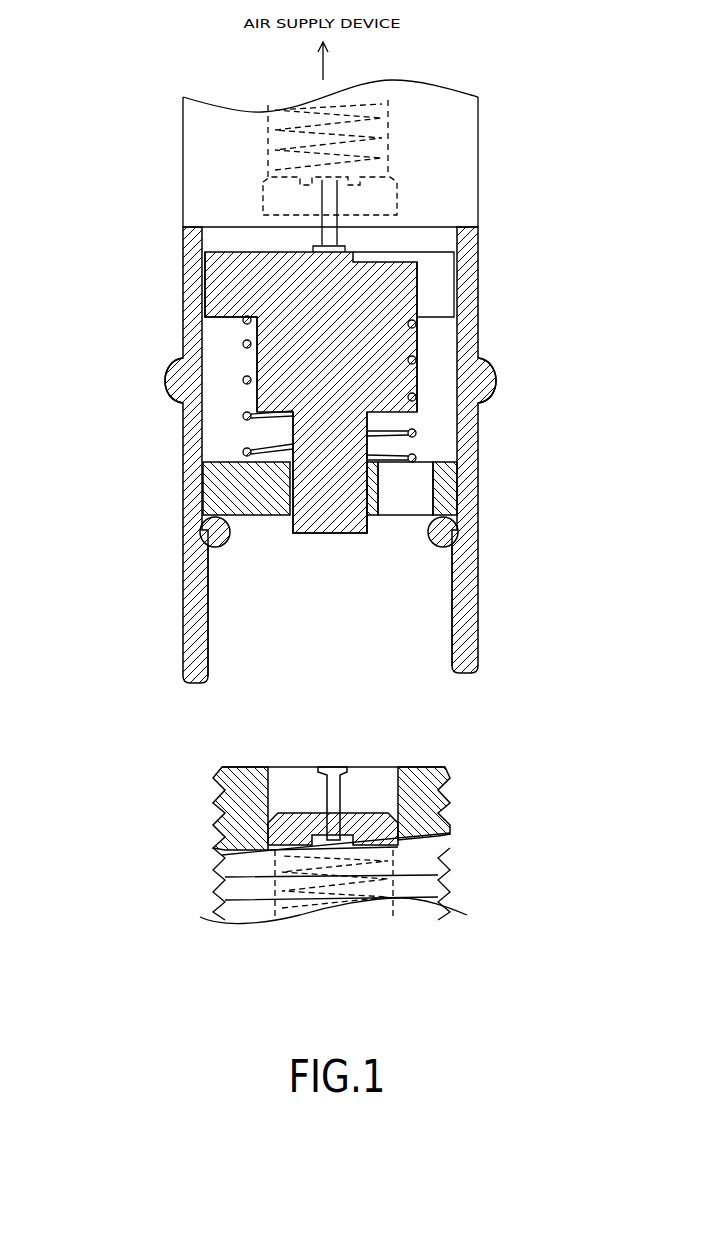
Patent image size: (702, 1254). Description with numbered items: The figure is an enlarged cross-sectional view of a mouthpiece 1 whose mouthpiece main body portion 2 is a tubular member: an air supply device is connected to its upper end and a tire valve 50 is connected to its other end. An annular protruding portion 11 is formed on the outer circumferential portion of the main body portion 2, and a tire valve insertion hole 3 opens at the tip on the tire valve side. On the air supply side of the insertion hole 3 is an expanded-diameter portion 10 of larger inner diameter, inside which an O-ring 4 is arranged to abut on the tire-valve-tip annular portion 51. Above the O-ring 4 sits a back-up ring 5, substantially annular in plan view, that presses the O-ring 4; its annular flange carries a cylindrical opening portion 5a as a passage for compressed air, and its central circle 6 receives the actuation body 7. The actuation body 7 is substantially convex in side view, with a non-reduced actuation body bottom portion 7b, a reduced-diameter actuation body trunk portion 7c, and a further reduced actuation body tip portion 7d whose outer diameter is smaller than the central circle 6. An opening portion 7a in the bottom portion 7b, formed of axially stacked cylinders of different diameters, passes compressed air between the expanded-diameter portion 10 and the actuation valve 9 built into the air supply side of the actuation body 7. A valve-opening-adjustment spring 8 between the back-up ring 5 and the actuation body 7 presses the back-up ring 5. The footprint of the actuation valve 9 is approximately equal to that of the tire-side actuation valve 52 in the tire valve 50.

The mouthpiece 1 is at (157, 182).
The mouthpiece main body portion 2 is at (433, 207).
The tire valve insertion hole 3 is at (303, 638).
The O-ring 4 is at (447, 532).
The back-up ring 5 is at (212, 484).
The opening portion 5a is at (412, 490).
The central circle 6 is at (370, 530).
The actuation body 7 is at (233, 240).
The opening portion 7a is at (433, 283).
The actuation body bottom portion 7b is at (228, 293).
The actuation body trunk portion 7c is at (288, 362).
The actuation body tip portion 7d is at (313, 527).
The valve-opening-adjustment spring 8 is at (415, 360).
The actuation valve 9 is at (390, 150).
The expanded-diameter portion 10 is at (213, 426).
The annular protruding portion 11 is at (166, 378).
The tire valve 50 is at (470, 843).
The tire-valve-tip annular portion 51 is at (417, 767).
The tire-side actuation valve 52 is at (268, 820).